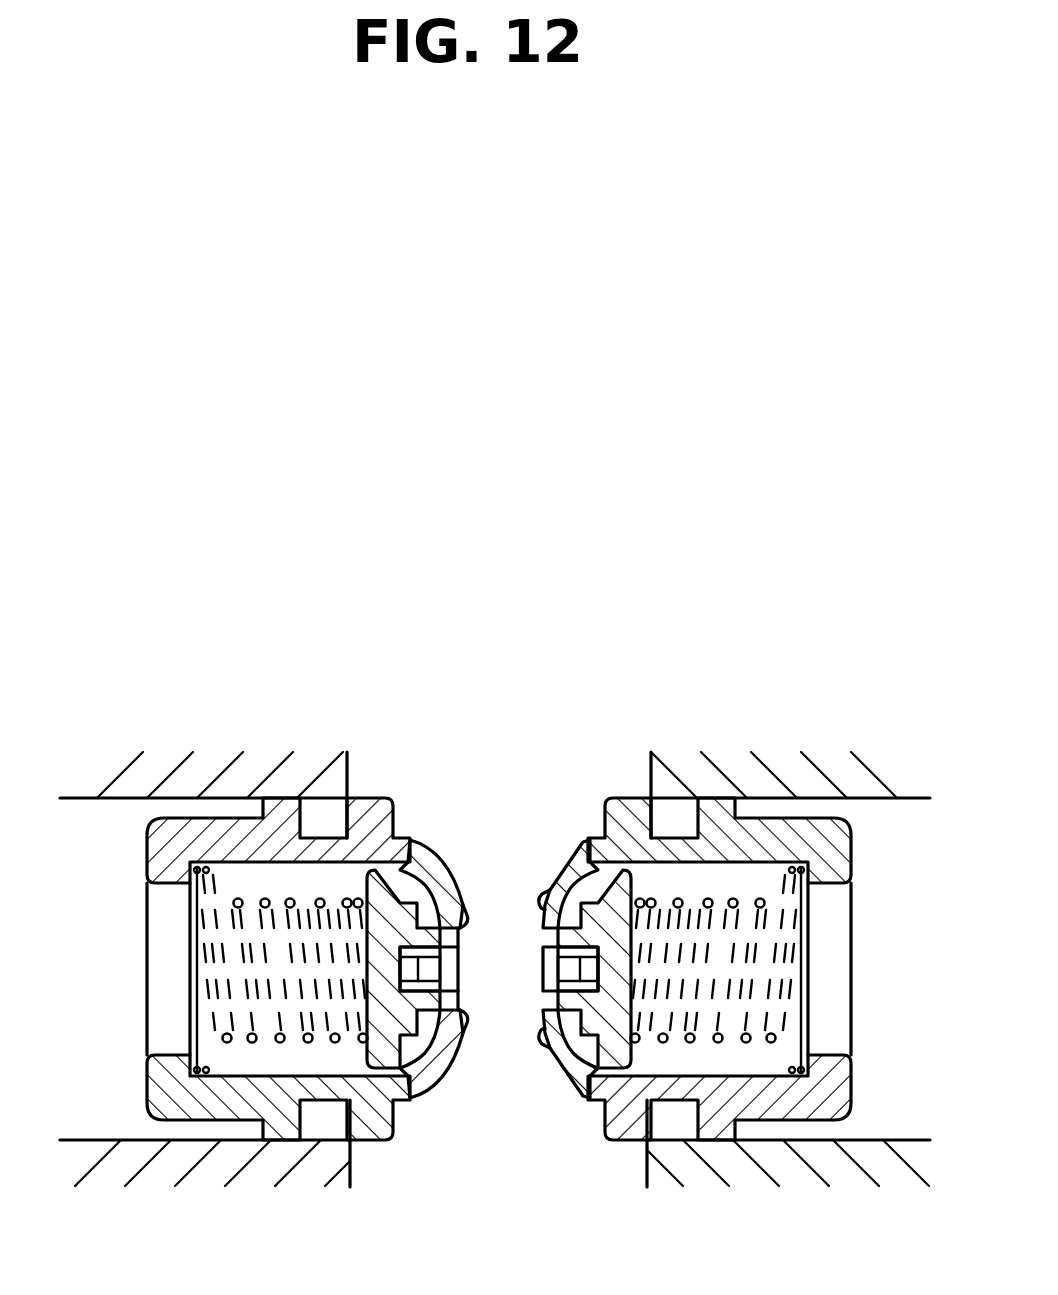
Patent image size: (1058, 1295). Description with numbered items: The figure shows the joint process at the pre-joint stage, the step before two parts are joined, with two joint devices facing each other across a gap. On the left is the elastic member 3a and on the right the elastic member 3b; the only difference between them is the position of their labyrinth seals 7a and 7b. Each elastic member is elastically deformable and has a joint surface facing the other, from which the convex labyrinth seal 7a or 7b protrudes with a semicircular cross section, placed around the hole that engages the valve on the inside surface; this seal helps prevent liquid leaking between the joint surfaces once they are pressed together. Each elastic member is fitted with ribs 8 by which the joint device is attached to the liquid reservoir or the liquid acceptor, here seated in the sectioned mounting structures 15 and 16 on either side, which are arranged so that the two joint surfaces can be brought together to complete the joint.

The elastic member 3a is at (433, 857).
The elastic member 3b is at (565, 857).
The labyrinth seal 7a is at (467, 918).
The labyrinth seal 7b is at (541, 895).
The ribs 8 is at (373, 793).
The first wall 15 is at (205, 793).
The second wall 16 is at (777, 762).